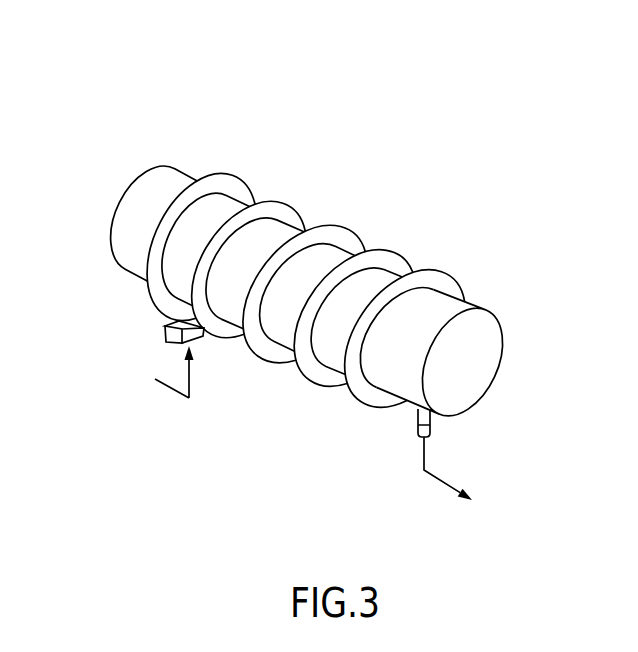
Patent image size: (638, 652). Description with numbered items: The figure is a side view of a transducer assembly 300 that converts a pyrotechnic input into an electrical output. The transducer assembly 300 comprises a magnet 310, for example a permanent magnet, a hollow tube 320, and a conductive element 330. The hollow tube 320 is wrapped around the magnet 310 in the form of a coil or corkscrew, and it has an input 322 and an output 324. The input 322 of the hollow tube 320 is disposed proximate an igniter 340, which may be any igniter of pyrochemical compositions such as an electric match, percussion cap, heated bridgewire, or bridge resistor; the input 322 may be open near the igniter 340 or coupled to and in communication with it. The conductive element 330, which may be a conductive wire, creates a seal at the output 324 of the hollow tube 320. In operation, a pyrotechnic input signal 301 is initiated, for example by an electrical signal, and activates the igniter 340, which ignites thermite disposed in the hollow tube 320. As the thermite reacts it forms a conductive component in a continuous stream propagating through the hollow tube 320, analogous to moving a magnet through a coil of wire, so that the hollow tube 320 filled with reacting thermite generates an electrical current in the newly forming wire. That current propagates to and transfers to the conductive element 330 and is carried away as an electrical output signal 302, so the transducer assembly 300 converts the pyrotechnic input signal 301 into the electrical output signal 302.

The transducer assembly 300 is at (186, 90).
The magnet 310 is at (132, 195).
The hollow tube 320 is at (237, 184).
The input 322 is at (163, 305).
The igniter 340 is at (165, 328).
The pyrotechnic input signal 301 is at (191, 378).
The output 324 is at (425, 417).
The conductive element 330 is at (418, 432).
The electrical output signal 302 is at (420, 462).